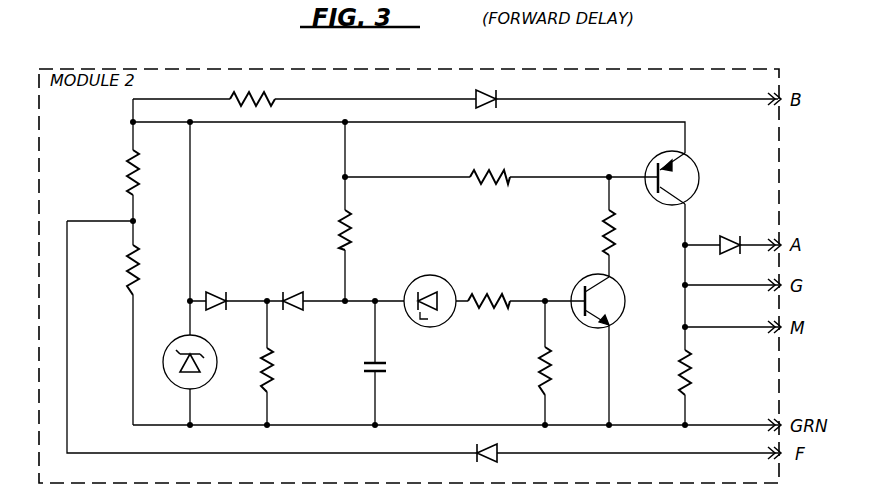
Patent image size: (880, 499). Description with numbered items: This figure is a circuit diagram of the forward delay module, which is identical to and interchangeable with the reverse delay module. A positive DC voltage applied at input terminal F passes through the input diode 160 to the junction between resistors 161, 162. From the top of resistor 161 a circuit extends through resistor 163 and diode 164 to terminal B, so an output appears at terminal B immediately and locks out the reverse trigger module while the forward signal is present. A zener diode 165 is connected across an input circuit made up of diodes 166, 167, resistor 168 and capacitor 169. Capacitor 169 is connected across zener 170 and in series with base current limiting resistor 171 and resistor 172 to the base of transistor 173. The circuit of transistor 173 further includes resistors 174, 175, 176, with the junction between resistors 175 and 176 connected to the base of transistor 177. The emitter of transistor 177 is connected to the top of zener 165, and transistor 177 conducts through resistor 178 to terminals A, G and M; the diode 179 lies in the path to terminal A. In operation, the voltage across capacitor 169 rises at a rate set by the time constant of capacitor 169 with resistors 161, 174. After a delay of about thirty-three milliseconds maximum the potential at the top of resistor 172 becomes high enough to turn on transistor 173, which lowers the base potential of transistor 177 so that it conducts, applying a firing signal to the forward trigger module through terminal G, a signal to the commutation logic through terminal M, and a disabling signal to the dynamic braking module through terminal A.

The input diode 160 is at (500, 456).
The resistor 161 is at (138, 191).
The resistor 162 is at (138, 290).
The resistor 163 is at (272, 92).
The diode 164 is at (482, 95).
The zener diode 165 is at (165, 378).
The diode 166 is at (220, 294).
The diode 167 is at (300, 293).
The resistor 168 is at (273, 371).
The capacitor 169 is at (386, 366).
The zener 170 is at (423, 328).
The base current limiting resistor 171 is at (500, 282).
The resistor 172 is at (538, 374).
The transistor 173 is at (576, 324).
The resistor 174 is at (350, 245).
The resistor 175 is at (492, 185).
The resistor 176 is at (600, 233).
The transistor 177 is at (700, 182).
The resistor 178 is at (692, 374).
The diode 179 is at (738, 226).